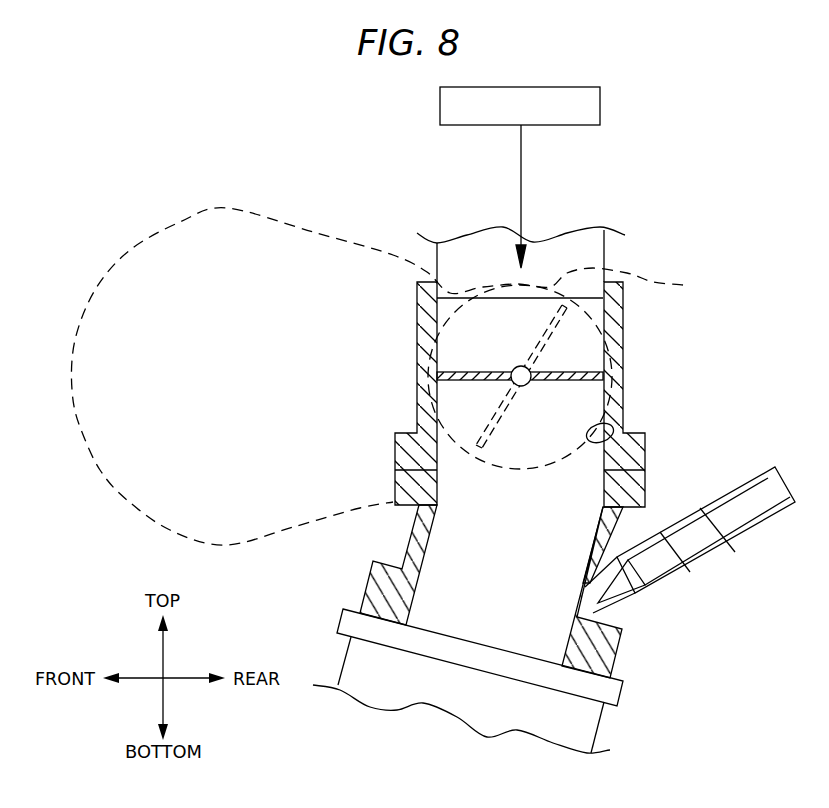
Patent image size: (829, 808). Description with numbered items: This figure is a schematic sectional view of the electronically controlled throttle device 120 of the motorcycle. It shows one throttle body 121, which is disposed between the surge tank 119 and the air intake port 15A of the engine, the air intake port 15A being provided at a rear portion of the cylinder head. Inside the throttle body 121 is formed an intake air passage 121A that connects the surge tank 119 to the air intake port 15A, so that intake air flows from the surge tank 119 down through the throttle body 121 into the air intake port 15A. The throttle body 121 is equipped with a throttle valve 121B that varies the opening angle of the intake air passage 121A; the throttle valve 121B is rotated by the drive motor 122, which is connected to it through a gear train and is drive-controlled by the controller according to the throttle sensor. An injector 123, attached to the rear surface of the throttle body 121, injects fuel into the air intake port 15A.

The surge tank 119 is at (600, 103).
The electronically controlled throttle device 120 is at (715, 307).
The throttle body 121 is at (623, 322).
The intake air passage 121A is at (585, 432).
The throttle valve 121B is at (583, 383).
The drive motor 122 is at (394, 376).
The injector 123 is at (745, 530).
The air intake port 15A is at (590, 727).